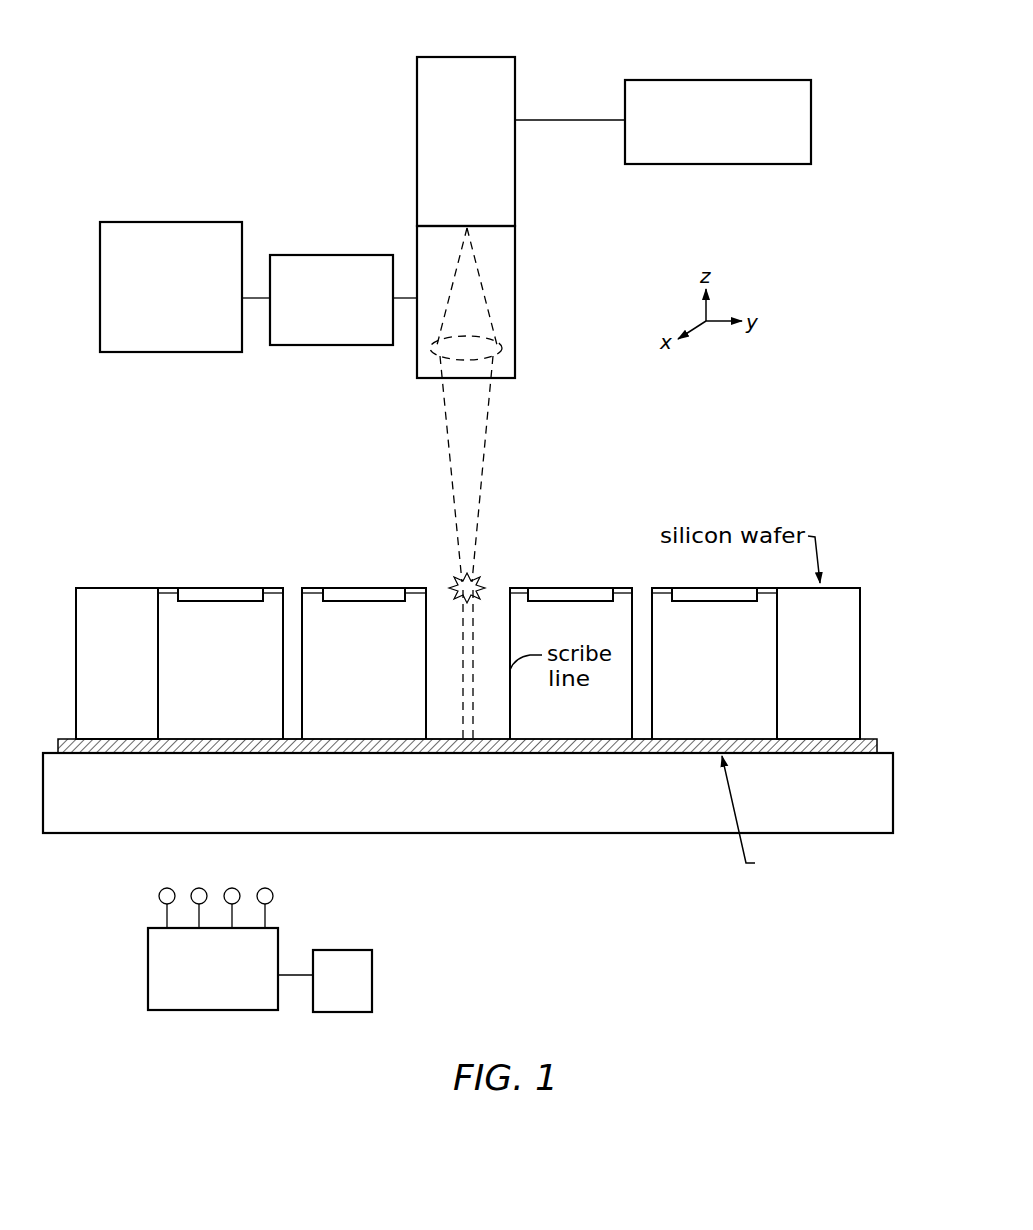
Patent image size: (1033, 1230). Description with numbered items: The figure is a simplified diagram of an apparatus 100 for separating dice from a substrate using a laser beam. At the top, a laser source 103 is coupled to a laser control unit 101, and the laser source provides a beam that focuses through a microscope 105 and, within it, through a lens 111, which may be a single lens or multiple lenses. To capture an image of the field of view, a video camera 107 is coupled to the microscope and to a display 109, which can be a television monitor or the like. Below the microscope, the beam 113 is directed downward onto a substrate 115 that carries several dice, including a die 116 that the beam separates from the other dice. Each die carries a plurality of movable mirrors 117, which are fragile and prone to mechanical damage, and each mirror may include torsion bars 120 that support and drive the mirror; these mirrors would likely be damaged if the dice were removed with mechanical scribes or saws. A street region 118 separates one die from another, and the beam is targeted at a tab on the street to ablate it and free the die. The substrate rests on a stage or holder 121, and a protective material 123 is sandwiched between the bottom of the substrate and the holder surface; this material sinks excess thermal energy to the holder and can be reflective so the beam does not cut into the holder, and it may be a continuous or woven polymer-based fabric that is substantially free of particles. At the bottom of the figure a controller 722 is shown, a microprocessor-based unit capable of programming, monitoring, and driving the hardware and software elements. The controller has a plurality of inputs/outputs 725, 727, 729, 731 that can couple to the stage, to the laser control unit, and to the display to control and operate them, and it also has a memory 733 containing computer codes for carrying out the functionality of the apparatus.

The apparatus 100 is at (582, 35).
The laser control unit 101 is at (718, 104).
The laser source 103 is at (506, 125).
The microscope 105 is at (503, 302).
The video camera 107 is at (329, 278).
The display 109 is at (171, 269).
The lens 111 is at (490, 375).
The beam 113 is at (656, 519).
The substrate 115 is at (119, 619).
The die 116 is at (711, 645).
The movable mirrors 117 is at (220, 621).
The street region 118 is at (367, 629).
The torsion bars 120 is at (226, 620).
The stage or holder 121 is at (468, 815).
The protective material 123 is at (483, 787).
The controller 722 is at (260, 928).
The input/output 725 is at (130, 902).
The input/output 727 is at (169, 886).
The input/output 729 is at (252, 886).
The input/output 731 is at (297, 908).
The memory 733 is at (374, 981).